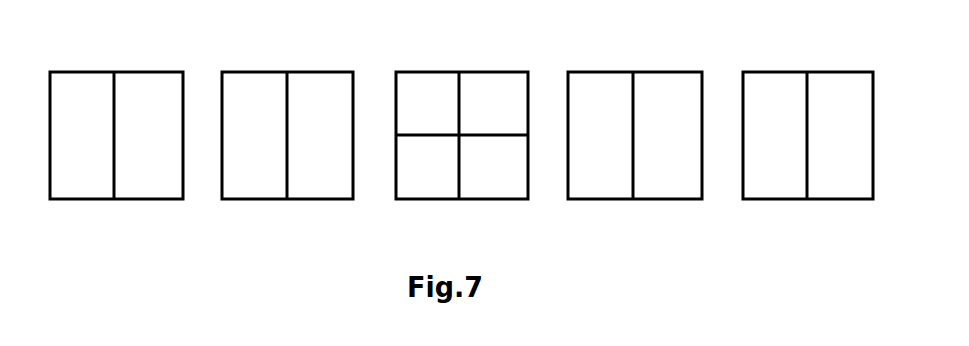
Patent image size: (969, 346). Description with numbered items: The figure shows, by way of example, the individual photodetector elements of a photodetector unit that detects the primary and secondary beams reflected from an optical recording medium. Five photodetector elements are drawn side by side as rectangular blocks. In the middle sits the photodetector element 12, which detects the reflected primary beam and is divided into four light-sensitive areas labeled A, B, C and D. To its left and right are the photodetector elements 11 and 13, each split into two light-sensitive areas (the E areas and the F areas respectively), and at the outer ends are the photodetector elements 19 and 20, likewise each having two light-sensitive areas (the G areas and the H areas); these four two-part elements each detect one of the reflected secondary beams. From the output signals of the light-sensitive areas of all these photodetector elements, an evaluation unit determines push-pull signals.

The photodetector element 19 is at (138, 67).
The photodetector element 11 is at (307, 67).
The photodetector element 12 is at (470, 67).
The photodetector element 13 is at (643, 67).
The photodetector element 20 is at (817, 67).